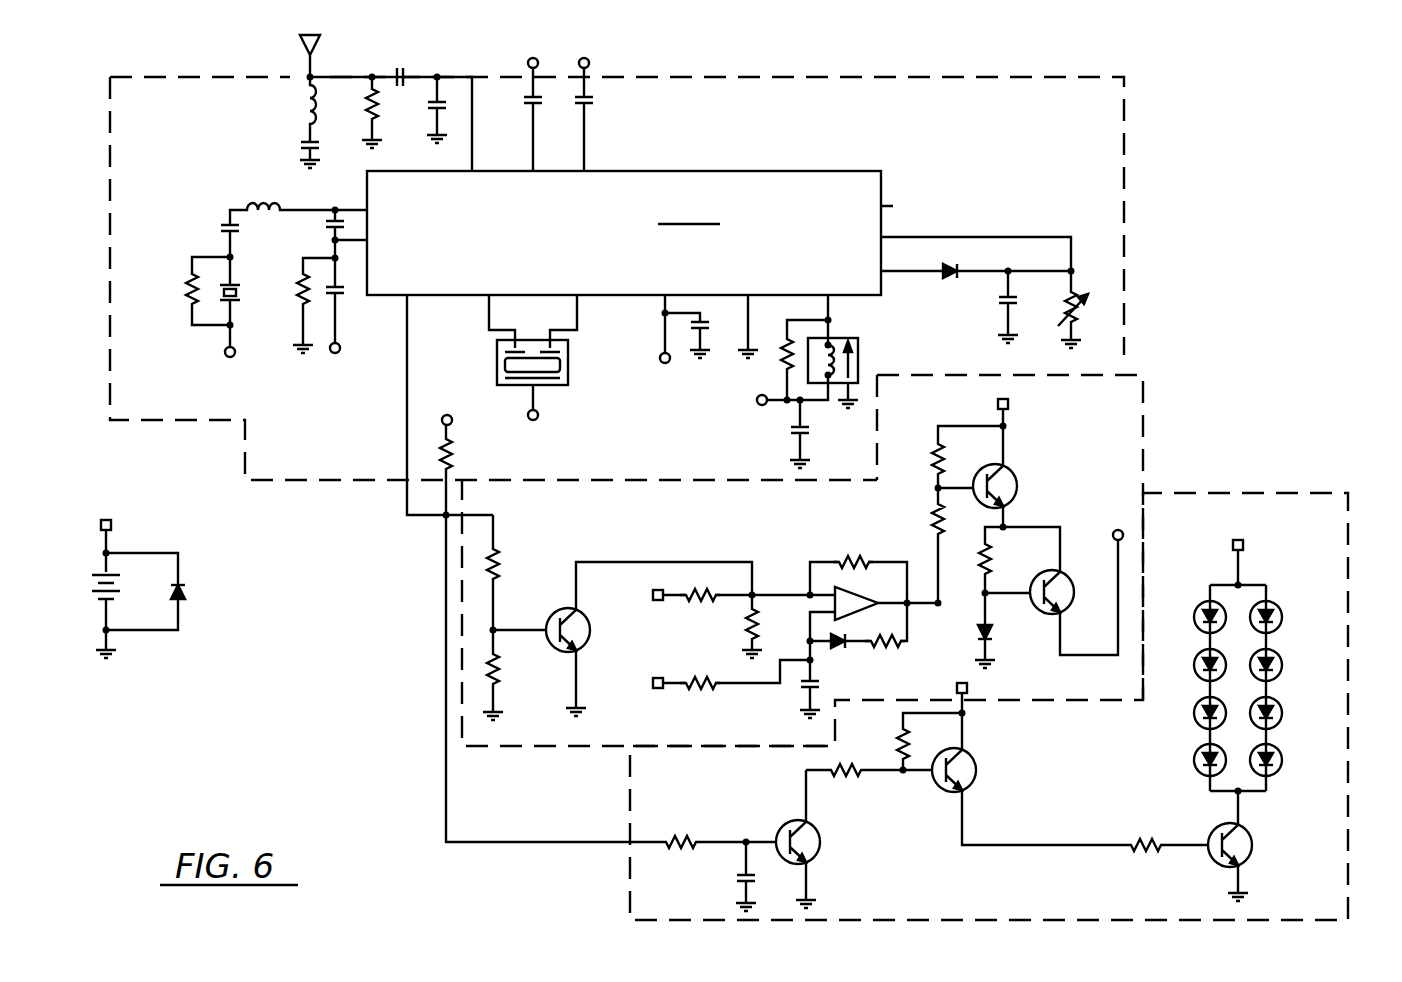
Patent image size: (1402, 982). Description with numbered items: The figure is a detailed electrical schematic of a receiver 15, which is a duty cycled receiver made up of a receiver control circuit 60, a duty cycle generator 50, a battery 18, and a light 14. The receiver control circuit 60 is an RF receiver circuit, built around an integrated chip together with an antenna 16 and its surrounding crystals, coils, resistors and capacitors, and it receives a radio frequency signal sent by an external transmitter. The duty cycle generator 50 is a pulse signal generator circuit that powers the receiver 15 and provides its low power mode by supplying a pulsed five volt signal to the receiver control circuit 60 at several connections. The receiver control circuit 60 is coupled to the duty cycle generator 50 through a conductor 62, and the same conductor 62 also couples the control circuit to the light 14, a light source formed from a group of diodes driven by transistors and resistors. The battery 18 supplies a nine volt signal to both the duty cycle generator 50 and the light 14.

The light 14 is at (1348, 545).
The receiver 15 is at (338, 748).
The antenna 16 is at (305, 60).
The battery 18 is at (95, 608).
The duty cycle generator 50 is at (1143, 375).
The receiver control circuit 60 is at (1124, 215).
The conductor 62 is at (407, 518).